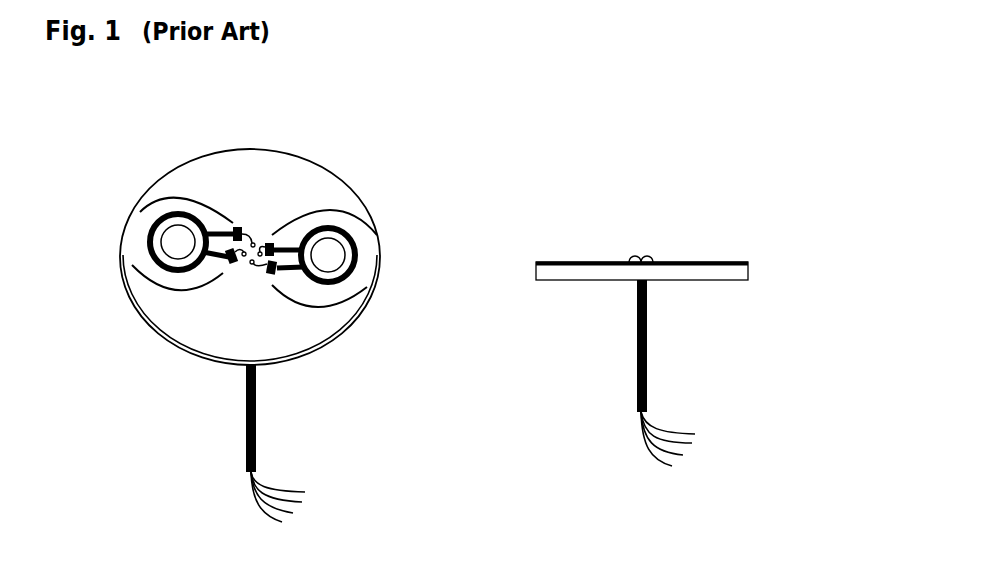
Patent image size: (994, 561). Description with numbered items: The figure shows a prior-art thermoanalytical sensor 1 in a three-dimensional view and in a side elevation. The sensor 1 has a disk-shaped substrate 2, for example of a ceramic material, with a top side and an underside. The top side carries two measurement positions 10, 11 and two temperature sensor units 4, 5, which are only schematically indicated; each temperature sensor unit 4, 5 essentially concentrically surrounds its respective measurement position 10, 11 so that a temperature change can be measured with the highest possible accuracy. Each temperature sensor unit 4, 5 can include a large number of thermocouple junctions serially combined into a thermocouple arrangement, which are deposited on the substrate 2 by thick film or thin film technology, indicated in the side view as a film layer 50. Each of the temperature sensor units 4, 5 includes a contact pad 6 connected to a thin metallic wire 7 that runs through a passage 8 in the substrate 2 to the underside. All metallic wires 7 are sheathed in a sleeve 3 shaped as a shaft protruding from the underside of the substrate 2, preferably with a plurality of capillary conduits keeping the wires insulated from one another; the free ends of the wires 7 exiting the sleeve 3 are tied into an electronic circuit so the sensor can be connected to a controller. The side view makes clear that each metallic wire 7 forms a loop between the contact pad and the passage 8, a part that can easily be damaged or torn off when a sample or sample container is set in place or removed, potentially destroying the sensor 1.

The thermoanalytical sensor 1 is at (366, 176).
The disk-shaped substrate 2 is at (185, 322).
The sleeve 3 is at (257, 413).
The temperature sensor unit 4 is at (353, 272).
The temperature sensor unit 5 is at (175, 217).
The contact pad 6 is at (232, 223).
The metallic wire 7 is at (254, 243).
The passage 8 is at (259, 240).
The measurement position 10 is at (328, 255).
The measurement position 11 is at (178, 240).
The film layer 50 is at (748, 264).